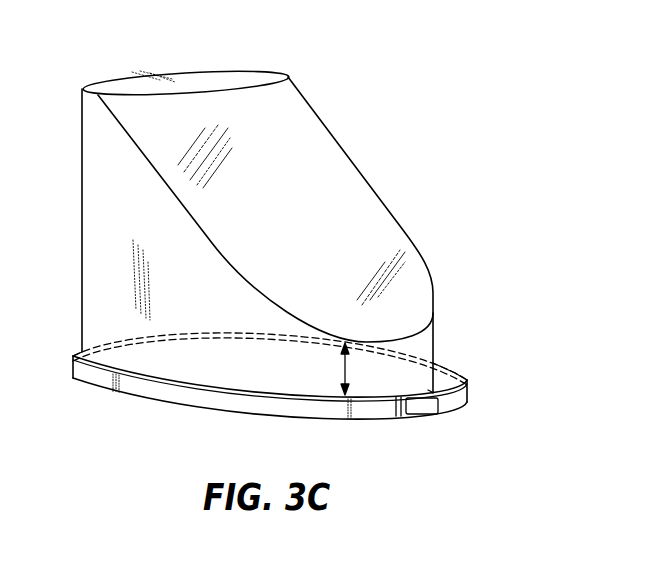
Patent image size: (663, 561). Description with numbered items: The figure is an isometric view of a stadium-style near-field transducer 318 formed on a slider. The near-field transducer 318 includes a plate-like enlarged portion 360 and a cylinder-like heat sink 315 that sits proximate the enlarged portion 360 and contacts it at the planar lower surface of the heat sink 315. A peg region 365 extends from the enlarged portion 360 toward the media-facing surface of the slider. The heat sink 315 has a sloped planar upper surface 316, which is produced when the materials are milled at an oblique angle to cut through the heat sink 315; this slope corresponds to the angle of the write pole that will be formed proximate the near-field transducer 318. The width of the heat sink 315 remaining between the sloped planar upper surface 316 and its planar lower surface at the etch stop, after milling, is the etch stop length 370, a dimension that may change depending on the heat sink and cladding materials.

The heat sink 315 is at (257, 230).
The sloped planar upper surface 316 is at (306, 128).
The near-field transducer 318 is at (270, 265).
The enlarged portion 360 is at (270, 398).
The peg region 365 is at (418, 410).
The etch stop length 370 is at (342, 364).